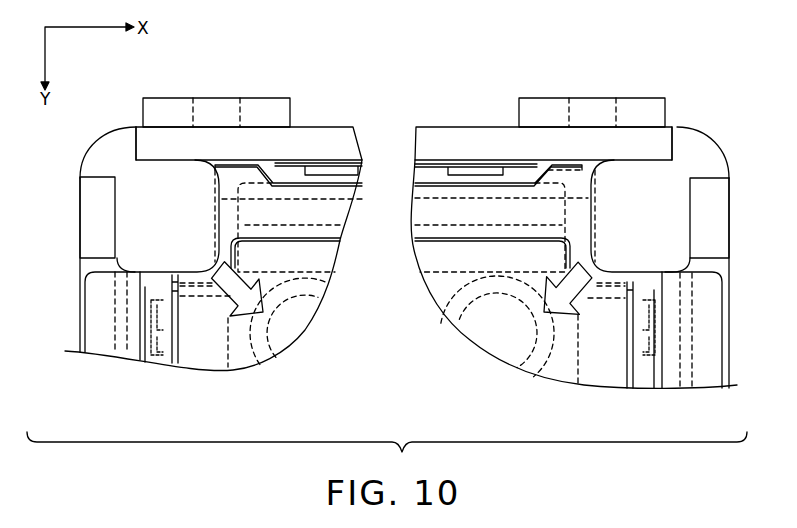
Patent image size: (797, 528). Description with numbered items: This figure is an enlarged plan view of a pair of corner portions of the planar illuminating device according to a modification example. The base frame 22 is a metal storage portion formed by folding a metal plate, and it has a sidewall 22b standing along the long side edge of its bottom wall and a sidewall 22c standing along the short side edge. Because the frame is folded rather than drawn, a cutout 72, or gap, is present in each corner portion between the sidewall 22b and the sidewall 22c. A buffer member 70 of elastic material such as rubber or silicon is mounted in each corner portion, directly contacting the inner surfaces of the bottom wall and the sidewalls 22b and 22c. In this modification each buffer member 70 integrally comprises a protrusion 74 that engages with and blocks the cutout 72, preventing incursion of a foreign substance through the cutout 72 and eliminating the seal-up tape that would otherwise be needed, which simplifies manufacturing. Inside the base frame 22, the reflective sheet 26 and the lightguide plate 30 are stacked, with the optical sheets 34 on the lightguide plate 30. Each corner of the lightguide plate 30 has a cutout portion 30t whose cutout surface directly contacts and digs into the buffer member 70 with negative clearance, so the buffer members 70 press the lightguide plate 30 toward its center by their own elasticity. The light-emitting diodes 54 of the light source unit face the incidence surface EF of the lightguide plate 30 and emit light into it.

The base frame 22 is at (320, 117).
The sidewall 22b is at (474, 140).
The sidewall 22c is at (80, 245).
The reflective sheet 26 is at (567, 182).
The lightguide plate 30 is at (520, 190).
The cutout portion 30t is at (205, 259).
The optical sheet 34 is at (605, 373).
The light-emitting diode 54 is at (336, 172).
The buffer member 70 is at (140, 220).
The cutout 72 is at (135, 143).
The protrusion 74 is at (97, 162).
The incidence surface EF is at (435, 172).